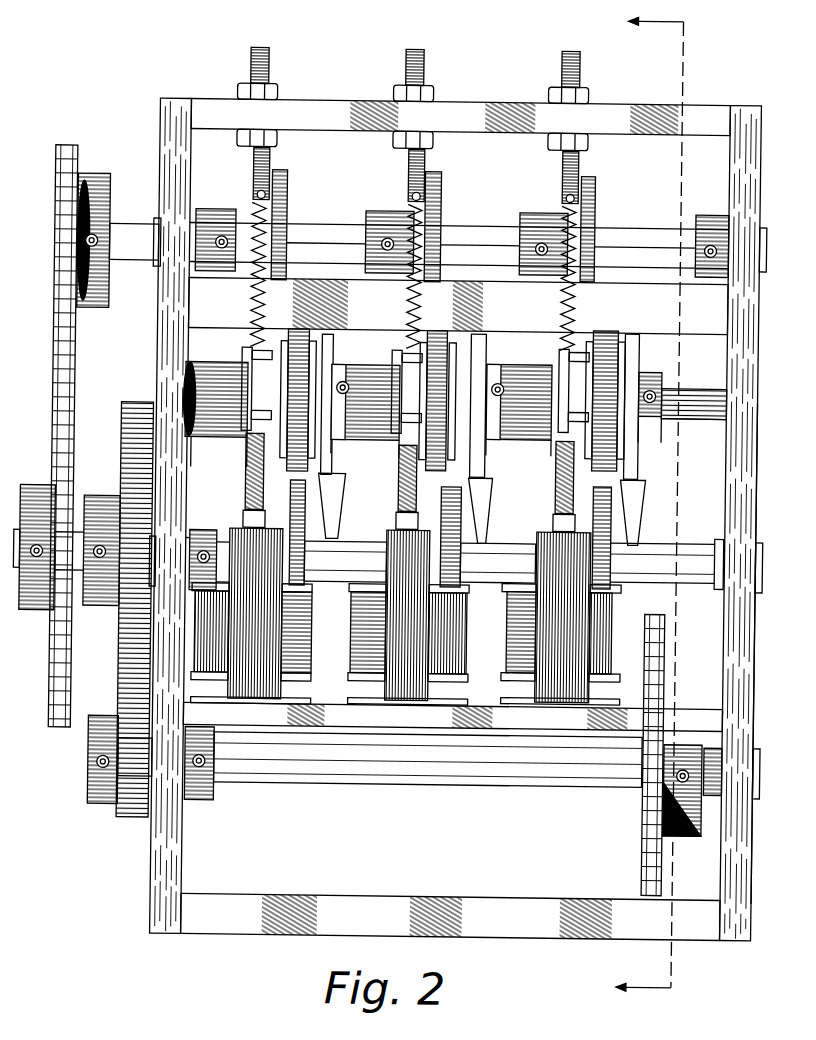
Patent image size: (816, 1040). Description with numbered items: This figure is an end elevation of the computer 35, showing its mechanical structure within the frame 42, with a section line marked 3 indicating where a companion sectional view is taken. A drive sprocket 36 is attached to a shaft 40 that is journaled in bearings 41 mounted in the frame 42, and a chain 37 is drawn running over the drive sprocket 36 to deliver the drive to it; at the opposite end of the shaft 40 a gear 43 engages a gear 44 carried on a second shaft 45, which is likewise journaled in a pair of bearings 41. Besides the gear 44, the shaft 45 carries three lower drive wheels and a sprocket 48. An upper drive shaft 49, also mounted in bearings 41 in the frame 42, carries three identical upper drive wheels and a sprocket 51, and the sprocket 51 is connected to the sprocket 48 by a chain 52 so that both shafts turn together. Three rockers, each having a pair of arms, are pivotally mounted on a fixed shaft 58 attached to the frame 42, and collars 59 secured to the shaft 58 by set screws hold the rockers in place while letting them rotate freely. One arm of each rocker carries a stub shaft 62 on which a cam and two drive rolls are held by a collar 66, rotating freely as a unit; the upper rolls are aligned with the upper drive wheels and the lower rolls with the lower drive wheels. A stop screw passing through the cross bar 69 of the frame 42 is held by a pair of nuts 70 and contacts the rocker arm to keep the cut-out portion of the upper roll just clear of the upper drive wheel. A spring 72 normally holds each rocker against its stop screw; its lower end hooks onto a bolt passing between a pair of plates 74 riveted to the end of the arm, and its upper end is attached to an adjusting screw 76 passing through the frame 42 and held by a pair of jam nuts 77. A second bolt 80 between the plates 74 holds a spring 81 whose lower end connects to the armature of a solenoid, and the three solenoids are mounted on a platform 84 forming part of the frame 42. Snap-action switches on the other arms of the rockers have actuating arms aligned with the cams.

The section line 3- 3 is at (660, 513).
The computer 35 is at (150, 866).
The drive sprocket 36 is at (692, 835).
The chain 37 is at (644, 886).
The shaft 40 is at (384, 787).
The bearings 41 is at (763, 245).
The frame 42 is at (757, 657).
The gear 43 is at (92, 800).
The gear 44 is at (100, 612).
The second shaft 45 is at (712, 590).
The sprocket 48 is at (30, 615).
The upper drive shaft 49 is at (473, 228).
The sprocket 51 is at (94, 178).
The chain 52 is at (76, 355).
The fixed shaft 58 is at (706, 418).
The collars 59 is at (655, 452).
The stub shaft 62 is at (664, 386).
The collar 66 is at (648, 372).
The cross bar 69 is at (722, 322).
The nuts 70 is at (242, 282).
The spring 72 is at (560, 230).
The plates 74 is at (202, 440).
The adjusting screw 76 is at (570, 56).
The jam nuts 77 is at (585, 96).
The second bolt 80 is at (248, 462).
The spring 81 is at (554, 491).
The platform 84 is at (437, 728).